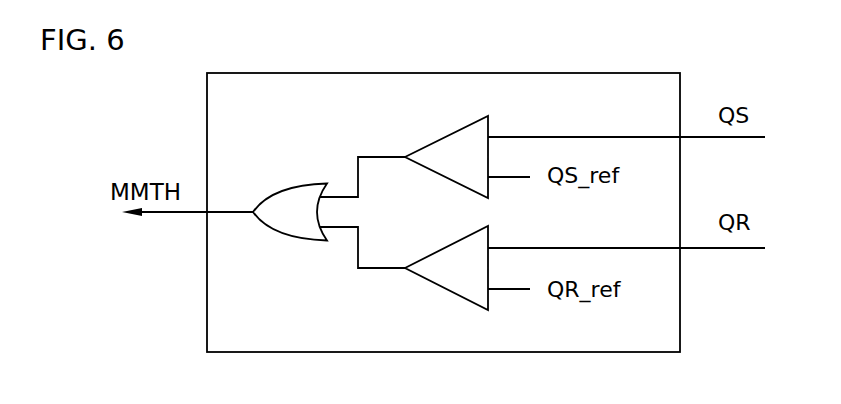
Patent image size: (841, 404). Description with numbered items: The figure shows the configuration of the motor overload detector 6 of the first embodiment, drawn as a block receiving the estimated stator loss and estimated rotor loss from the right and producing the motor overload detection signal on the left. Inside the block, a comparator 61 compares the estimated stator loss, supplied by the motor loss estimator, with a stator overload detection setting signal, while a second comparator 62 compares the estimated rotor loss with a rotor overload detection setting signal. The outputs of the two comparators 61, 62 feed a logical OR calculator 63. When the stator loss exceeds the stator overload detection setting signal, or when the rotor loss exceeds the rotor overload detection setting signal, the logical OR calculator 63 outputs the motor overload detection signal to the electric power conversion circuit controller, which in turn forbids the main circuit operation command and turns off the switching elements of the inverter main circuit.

The motor overload detector 6 is at (632, 73).
The comparator 61 is at (438, 174).
The comparator 62 is at (445, 288).
The logical OR calculator 63 is at (296, 185).